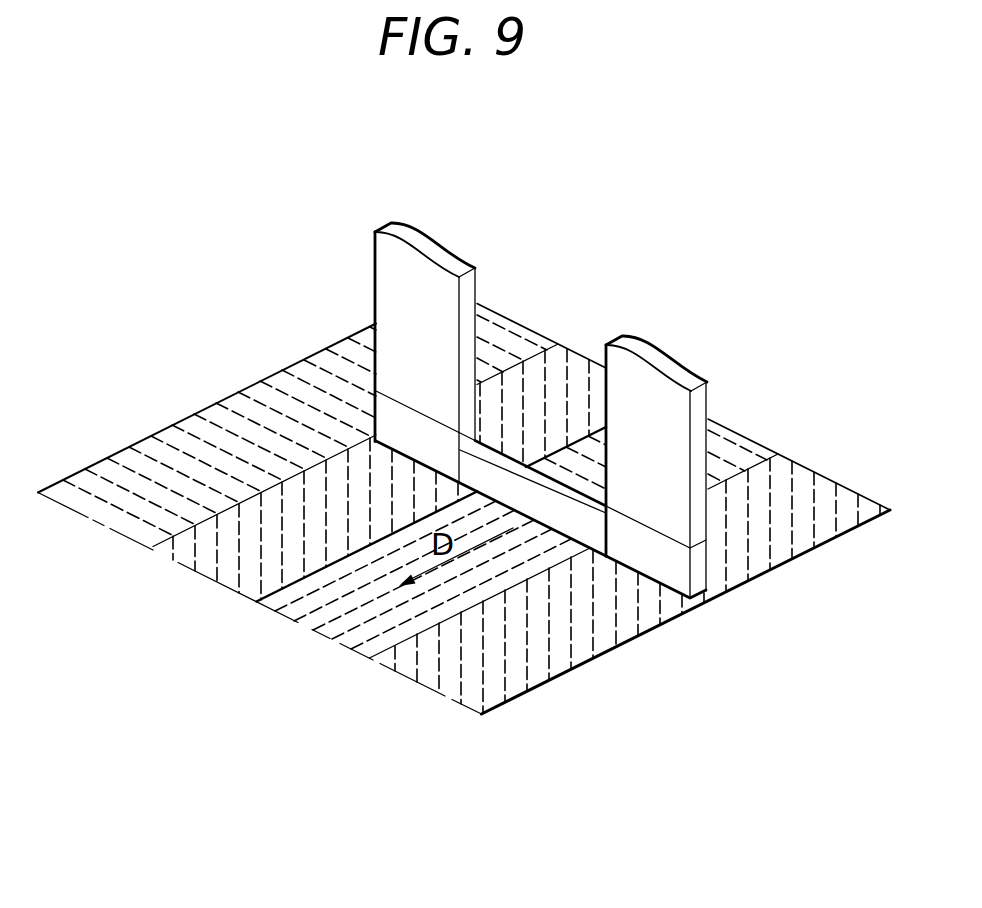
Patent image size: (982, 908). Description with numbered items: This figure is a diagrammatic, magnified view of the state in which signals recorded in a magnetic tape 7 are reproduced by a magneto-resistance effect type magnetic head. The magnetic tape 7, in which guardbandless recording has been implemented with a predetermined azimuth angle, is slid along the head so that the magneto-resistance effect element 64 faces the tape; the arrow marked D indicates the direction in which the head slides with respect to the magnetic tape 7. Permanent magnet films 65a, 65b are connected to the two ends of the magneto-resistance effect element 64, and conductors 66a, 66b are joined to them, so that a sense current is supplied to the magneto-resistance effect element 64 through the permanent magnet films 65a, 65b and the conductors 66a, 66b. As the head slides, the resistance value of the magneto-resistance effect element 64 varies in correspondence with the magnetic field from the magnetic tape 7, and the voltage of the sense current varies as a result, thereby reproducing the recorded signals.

The magnetic tape 7 is at (565, 676).
The magneto-resistance effect element 64 is at (517, 490).
The permanent magnet film 65a is at (393, 422).
The permanent magnet film 65b is at (664, 578).
The conductor 66a is at (392, 270).
The conductor 66b is at (680, 419).